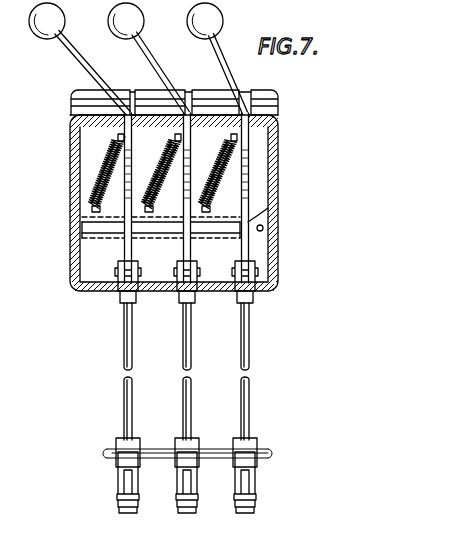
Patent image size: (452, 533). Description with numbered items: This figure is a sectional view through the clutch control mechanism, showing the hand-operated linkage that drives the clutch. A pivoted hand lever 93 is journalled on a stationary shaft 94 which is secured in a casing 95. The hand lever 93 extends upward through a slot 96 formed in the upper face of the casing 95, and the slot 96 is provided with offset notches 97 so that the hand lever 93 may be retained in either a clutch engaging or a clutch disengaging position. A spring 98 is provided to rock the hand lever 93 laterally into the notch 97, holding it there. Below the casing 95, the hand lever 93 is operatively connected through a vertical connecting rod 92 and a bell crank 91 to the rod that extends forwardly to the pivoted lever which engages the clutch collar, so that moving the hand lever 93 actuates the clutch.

The bell crank 91 is at (126, 483).
The vertical connecting rod 92 is at (262, 369).
The hand lever 93 is at (248, 68).
The stationary shaft 94 is at (90, 232).
The casing 95 is at (70, 138).
The slot 96 is at (188, 97).
The offset notch 97 is at (122, 112).
The spring 98 is at (96, 168).